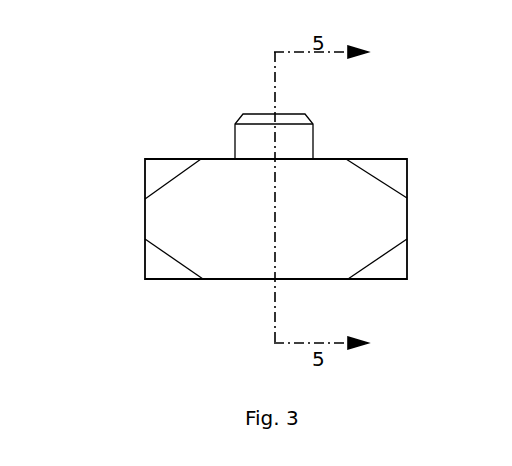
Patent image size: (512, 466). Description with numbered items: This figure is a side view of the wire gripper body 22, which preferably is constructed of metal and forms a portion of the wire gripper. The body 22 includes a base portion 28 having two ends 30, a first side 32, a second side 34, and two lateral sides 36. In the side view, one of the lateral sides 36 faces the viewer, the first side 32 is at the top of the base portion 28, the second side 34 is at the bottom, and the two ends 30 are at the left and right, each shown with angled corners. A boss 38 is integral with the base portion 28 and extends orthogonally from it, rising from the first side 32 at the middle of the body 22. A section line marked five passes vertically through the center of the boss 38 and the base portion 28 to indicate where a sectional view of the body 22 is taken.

The wire gripper body 22 is at (124, 119).
The base portion 28 is at (317, 266).
The ends 30 is at (145, 217).
The first side 32 is at (337, 159).
The second side 34 is at (232, 279).
The lateral sides 36 is at (276, 219).
The boss 38 is at (233, 141).